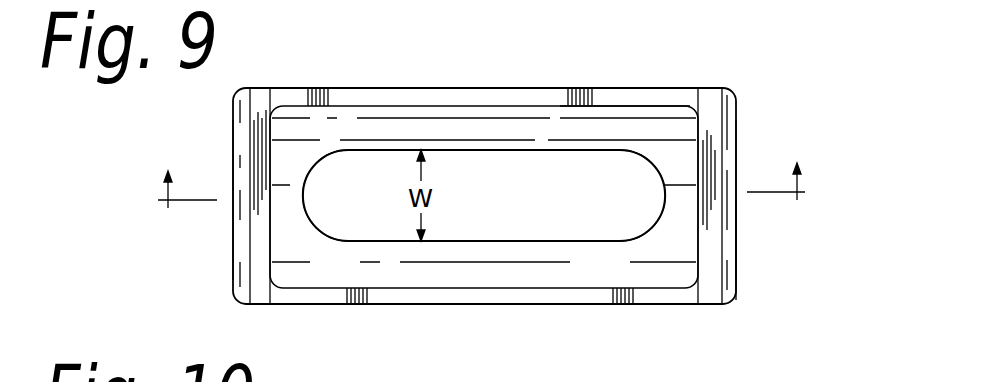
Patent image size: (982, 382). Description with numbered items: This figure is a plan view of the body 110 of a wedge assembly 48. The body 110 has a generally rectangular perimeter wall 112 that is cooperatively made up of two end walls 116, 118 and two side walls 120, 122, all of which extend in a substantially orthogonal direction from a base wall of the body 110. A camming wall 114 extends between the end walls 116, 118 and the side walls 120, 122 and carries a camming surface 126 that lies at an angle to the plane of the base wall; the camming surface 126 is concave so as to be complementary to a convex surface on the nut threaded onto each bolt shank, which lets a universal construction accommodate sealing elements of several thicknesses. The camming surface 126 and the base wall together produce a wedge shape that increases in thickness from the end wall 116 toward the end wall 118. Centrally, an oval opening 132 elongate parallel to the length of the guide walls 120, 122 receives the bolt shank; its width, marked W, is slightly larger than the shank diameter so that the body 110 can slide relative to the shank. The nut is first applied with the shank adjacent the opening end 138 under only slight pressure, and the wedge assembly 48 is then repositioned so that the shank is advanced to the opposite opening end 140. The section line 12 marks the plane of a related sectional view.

The body 110 is at (465, 277).
The perimeter wall 112 is at (541, 88).
The camming wall 114 is at (615, 132).
The end wall 116 is at (233, 249).
The end wall 118 is at (738, 128).
The side wall 120 is at (352, 305).
The side wall 122 is at (436, 88).
The camming surface 126 is at (358, 127).
The oval opening 132 is at (493, 150).
The opening end 138 is at (328, 157).
The opposite opening end 140 is at (652, 158).
The wedge assembly 48 is at (738, 240).
The section line 12 is at (484, 171).